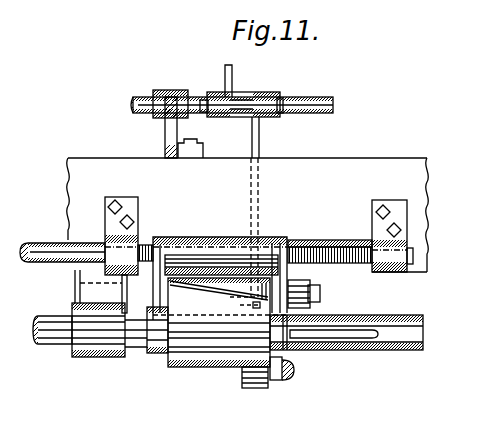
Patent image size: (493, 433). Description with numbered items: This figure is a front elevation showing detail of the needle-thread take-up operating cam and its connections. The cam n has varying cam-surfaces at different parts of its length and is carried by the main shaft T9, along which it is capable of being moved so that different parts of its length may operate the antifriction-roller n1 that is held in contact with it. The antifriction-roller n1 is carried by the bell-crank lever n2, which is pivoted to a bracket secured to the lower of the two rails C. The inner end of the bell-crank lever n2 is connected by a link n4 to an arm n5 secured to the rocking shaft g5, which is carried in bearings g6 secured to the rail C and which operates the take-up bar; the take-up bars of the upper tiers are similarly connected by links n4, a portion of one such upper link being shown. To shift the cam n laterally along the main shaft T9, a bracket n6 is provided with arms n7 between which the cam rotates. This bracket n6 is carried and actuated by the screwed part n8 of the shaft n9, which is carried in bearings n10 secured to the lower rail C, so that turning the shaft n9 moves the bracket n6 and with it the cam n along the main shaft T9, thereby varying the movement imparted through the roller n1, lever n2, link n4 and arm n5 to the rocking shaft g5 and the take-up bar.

The rail C is at (248, 215).
The rocking shaft g5 is at (333, 105).
The bearings g6 is at (158, 110).
The arm n5 is at (235, 117).
The link n4 is at (225, 73).
The bearings n10 is at (108, 233).
The shaft n9 is at (47, 243).
The screwed part n8 is at (325, 248).
The bracket n6 is at (233, 233).
The cam n is at (219, 322).
The antifriction-roller n1 is at (265, 388).
The arms n7 is at (320, 287).
The bell-crank lever n2 is at (157, 292).
The main shaft T9 is at (38, 331).